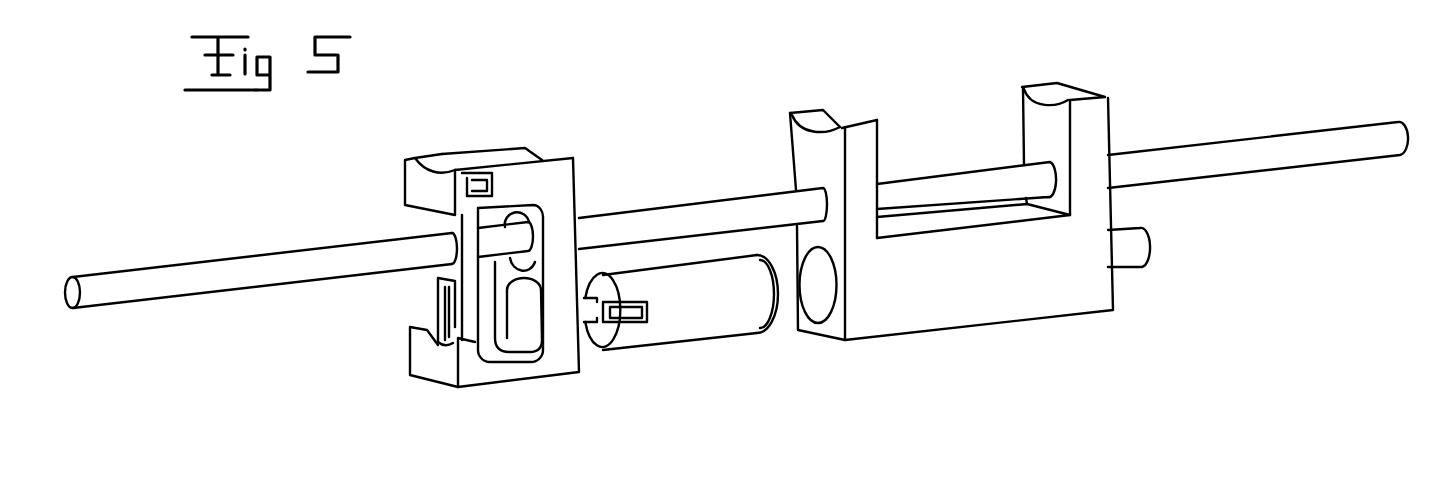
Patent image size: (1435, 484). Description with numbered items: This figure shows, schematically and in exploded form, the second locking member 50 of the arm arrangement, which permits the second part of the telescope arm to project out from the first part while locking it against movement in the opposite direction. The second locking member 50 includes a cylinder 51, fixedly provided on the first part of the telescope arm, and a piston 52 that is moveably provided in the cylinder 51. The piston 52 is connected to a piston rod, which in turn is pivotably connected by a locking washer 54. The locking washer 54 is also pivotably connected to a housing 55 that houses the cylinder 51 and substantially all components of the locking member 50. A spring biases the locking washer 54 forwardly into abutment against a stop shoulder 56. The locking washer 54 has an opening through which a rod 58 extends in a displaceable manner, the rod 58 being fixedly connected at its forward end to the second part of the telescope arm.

The second locking member 50 is at (698, 107).
The cylinder 51 is at (983, 307).
The piston 52 is at (703, 320).
The locking washer 54 is at (437, 233).
The housing 55 is at (803, 160).
The stop shoulder 56 is at (437, 327).
The rod 58 is at (188, 277).